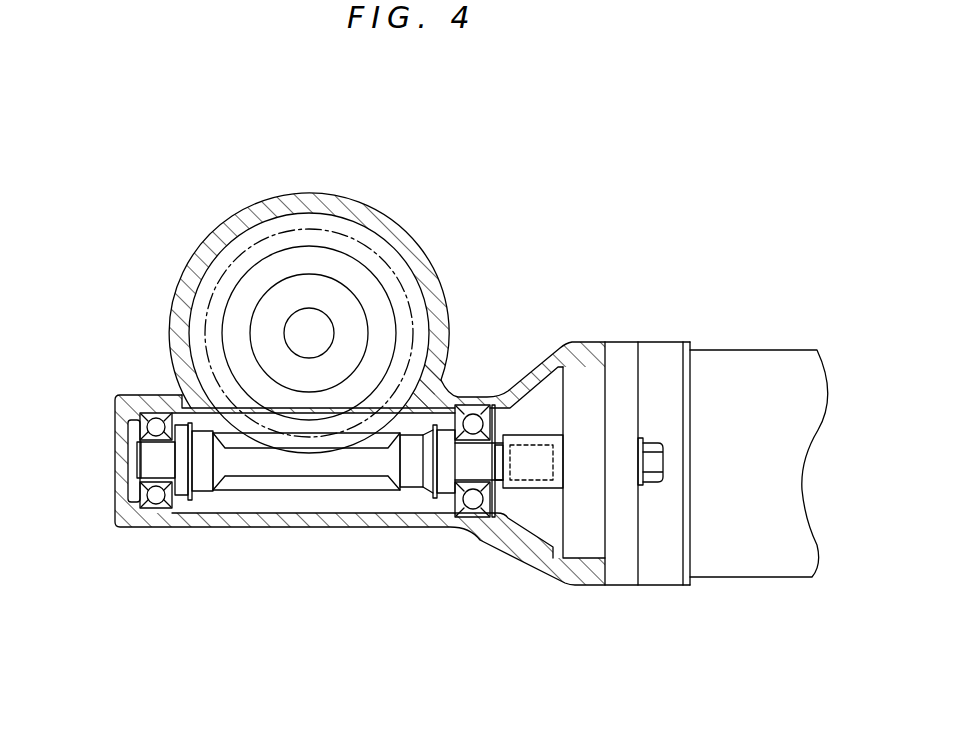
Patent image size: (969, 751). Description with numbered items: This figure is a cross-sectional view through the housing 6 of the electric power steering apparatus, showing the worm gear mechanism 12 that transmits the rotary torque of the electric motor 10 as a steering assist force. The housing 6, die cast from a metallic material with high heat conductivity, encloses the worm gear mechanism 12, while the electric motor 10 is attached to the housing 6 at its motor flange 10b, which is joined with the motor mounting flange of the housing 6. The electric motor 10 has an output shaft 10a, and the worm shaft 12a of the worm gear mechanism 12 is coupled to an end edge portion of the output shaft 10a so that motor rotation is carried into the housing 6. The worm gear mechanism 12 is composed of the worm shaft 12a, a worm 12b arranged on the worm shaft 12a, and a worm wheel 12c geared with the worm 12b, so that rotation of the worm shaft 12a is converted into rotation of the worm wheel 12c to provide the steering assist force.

The housing 6 is at (318, 328).
The electric motor 10 is at (759, 422).
The output shaft 10a is at (533, 546).
The motor flange 10b is at (644, 507).
The worm gear mechanism 12 is at (261, 520).
The worm shaft 12a is at (97, 457).
The worm 12b is at (306, 523).
The worm wheel 12c is at (259, 333).